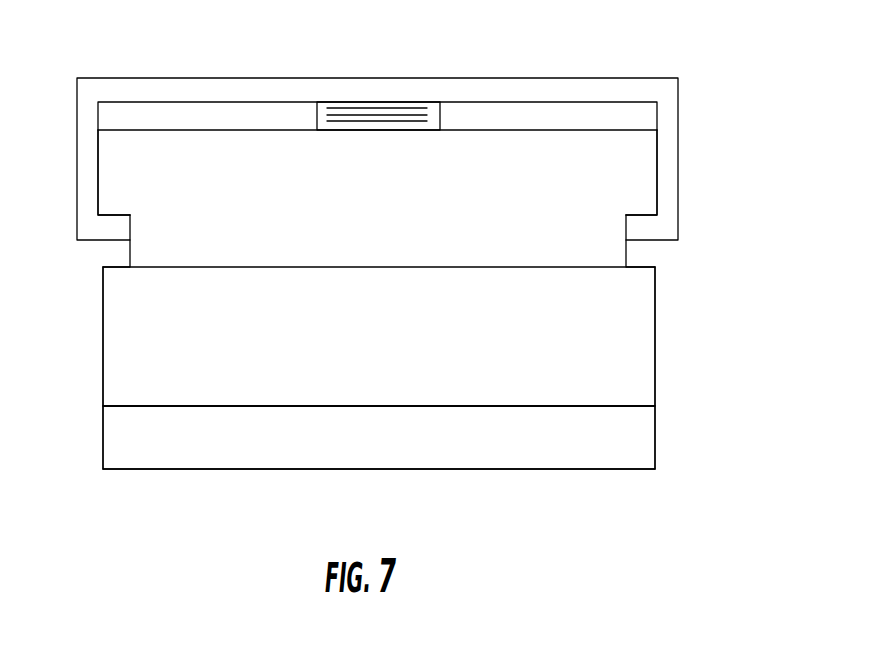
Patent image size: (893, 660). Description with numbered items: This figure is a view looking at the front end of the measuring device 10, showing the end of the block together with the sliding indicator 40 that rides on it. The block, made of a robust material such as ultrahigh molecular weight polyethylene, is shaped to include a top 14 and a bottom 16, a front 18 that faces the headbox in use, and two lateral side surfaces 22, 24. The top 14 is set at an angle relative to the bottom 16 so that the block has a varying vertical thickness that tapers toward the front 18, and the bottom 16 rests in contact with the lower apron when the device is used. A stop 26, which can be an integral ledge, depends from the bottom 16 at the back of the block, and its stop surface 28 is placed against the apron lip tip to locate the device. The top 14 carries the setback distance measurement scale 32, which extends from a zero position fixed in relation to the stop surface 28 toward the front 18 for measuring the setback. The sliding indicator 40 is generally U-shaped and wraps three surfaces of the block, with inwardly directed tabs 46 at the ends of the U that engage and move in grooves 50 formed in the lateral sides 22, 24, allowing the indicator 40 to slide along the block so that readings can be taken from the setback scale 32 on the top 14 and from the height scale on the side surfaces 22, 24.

The measuring device 10 is at (722, 120).
The top 14 is at (140, 117).
The bottom 16 is at (373, 406).
The front 18 is at (480, 382).
The lateral side surface 22 is at (100, 372).
The lateral side surface 24 is at (657, 385).
The stop 26 is at (558, 470).
The stop surface 28 is at (208, 445).
The setback distance measurement scale 32 is at (380, 110).
The sliding indicator 40 is at (679, 78).
The inwardly directed tabs 46 is at (123, 233).
The grooves 50 is at (110, 253).